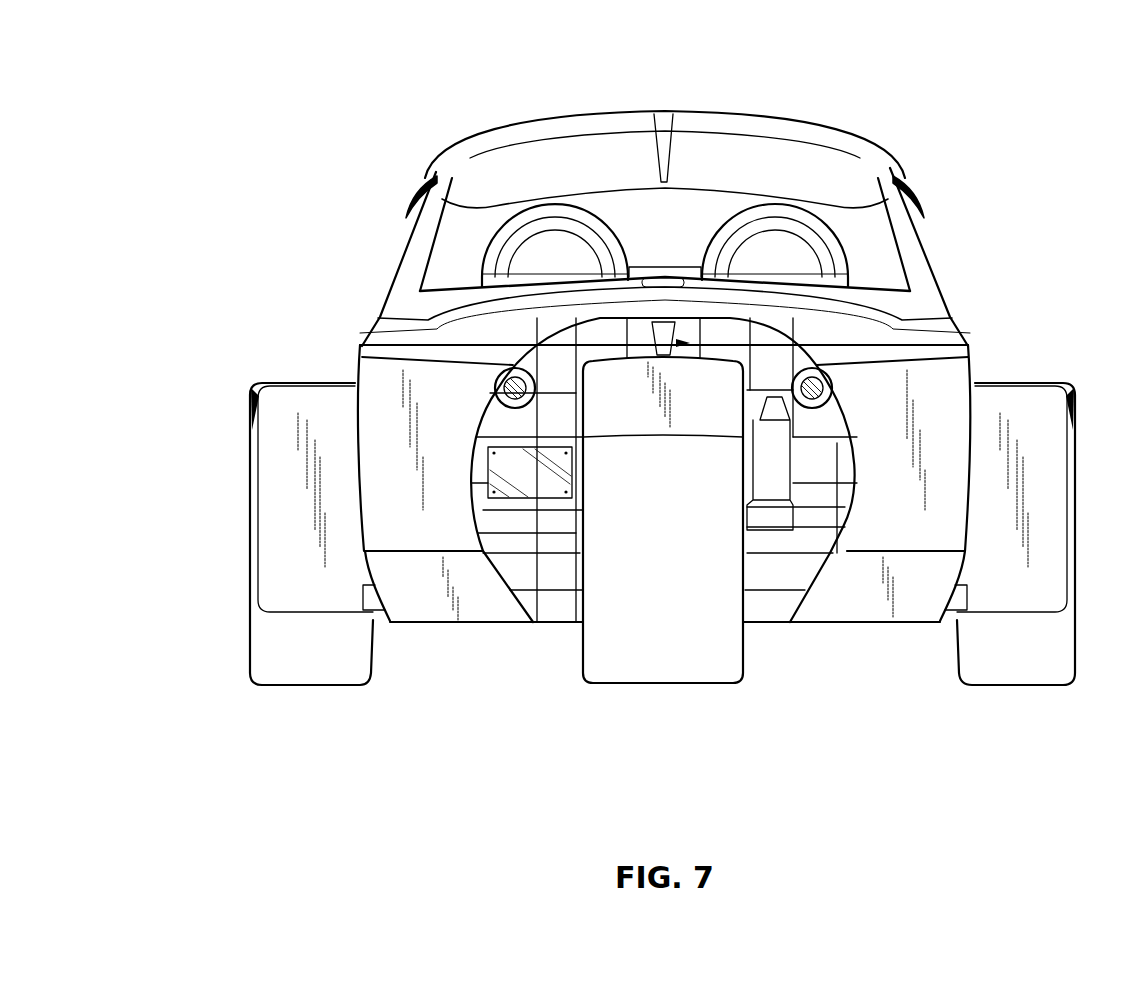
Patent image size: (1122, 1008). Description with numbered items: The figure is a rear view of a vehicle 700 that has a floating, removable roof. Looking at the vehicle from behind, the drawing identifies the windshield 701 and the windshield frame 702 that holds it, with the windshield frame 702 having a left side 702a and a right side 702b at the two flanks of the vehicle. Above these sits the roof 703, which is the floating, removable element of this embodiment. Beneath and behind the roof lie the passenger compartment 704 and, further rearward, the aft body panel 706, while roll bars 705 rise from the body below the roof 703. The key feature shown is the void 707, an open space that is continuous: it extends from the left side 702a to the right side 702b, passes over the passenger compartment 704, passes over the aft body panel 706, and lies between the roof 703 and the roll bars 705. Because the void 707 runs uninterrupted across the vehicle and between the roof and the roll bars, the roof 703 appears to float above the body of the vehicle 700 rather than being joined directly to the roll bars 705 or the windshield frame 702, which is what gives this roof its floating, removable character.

The vehicle 700 is at (182, 75).
The windshield 701 is at (423, 253).
The windshield frame 702 is at (383, 273).
The left side 702a is at (289, 287).
The right side 702b is at (991, 269).
The roof 703 is at (604, 112).
The passenger compartment 704 is at (914, 310).
The roll bars 705 is at (558, 235).
The aft body panel 706 is at (512, 345).
The void 707 is at (872, 221).